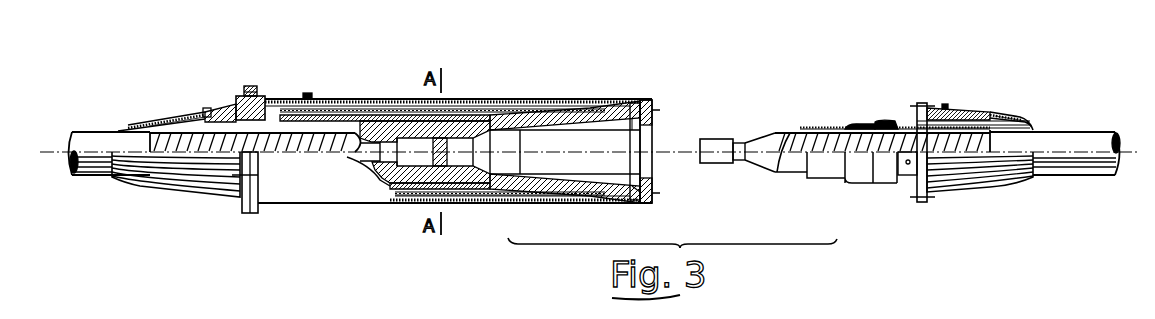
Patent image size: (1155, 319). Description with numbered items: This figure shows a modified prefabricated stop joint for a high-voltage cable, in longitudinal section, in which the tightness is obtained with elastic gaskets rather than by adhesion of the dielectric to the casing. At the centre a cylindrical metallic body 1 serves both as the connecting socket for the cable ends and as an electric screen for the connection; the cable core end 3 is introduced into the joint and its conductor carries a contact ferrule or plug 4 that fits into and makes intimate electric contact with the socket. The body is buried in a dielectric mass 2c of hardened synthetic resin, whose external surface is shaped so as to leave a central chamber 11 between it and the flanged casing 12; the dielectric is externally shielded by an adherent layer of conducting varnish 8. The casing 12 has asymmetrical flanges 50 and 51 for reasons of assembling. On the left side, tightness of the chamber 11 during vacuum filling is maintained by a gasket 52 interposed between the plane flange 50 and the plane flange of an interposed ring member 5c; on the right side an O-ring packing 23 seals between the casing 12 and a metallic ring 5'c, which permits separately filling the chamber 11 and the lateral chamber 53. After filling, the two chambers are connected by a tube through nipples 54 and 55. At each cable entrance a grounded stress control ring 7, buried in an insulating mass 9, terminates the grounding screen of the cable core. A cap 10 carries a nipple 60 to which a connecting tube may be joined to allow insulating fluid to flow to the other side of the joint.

The cylindrical metallic body 1 is at (500, 123).
The dielectric mass 2c is at (583, 113).
The cable core end 3 is at (790, 133).
The contact ferrule or plug 4 is at (715, 138).
The interposed ring member 5c is at (242, 96).
The metallic ring 5'c is at (660, 129).
The stress control ring 7 is at (877, 122).
The conducting varnish layer 8 is at (343, 100).
The insulating mass 9 is at (852, 123).
The cap 10 is at (166, 118).
The central chamber 11 is at (468, 108).
The flanged casing 12 is at (386, 98).
The O-ring packing 23 is at (634, 190).
The plane flange 50 is at (253, 88).
The flange 51 is at (650, 102).
The gasket 52 is at (262, 100).
The lateral chamber 53 is at (182, 122).
The nipple 54 is at (309, 93).
The nipple 55 is at (947, 107).
The nipple 60 is at (203, 113).